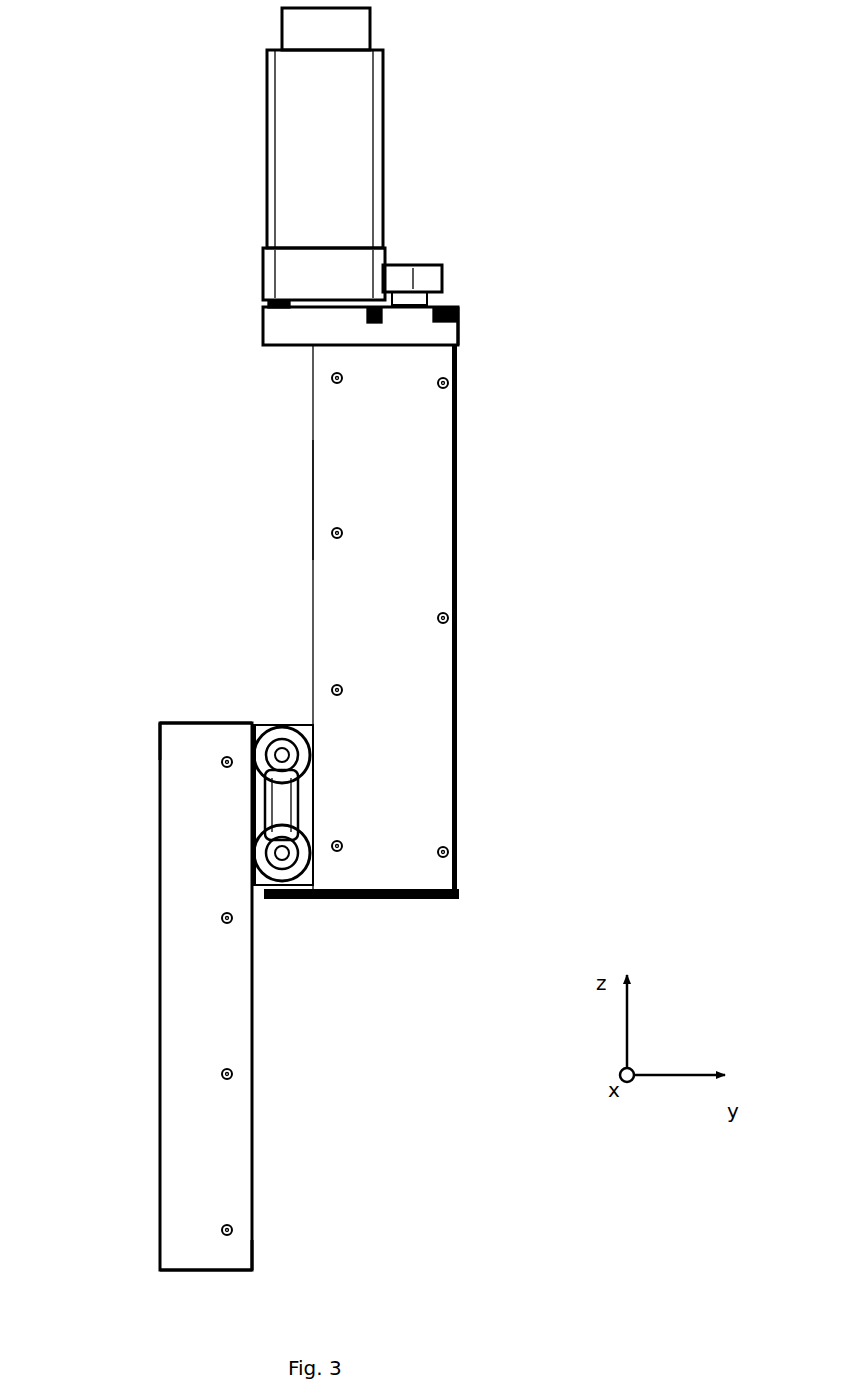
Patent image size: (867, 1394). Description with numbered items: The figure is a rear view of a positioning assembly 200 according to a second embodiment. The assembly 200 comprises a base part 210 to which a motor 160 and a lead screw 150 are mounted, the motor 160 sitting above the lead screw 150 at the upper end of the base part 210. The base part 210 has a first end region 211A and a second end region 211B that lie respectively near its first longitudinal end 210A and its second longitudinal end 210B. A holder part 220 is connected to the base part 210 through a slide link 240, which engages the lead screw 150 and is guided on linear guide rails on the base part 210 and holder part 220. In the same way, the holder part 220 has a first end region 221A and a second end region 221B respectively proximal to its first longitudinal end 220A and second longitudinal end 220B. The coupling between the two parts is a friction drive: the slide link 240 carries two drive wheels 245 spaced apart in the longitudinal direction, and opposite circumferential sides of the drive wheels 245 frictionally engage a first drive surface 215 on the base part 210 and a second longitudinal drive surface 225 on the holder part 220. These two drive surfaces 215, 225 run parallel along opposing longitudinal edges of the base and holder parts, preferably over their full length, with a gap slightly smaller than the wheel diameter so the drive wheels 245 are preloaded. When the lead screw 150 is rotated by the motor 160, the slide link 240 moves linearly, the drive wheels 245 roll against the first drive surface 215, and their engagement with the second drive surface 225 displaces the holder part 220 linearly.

The positioning assembly 200 is at (207, 410).
The motor 160 is at (338, 172).
The lead screw 150 is at (413, 268).
The base part 210 is at (403, 540).
The first longitudinal end 210A is at (448, 307).
The second longitudinal end 210B is at (433, 898).
The first end region 211A is at (465, 342).
The second end region 211B is at (460, 873).
The first drive surface 215 is at (310, 496).
The holder part 220 is at (183, 960).
The first longitudinal end 220A is at (173, 720).
The second longitudinal end 220B is at (237, 1272).
The first end region 221A is at (152, 729).
The second end region 221B is at (260, 1258).
The second longitudinal drive surface 225 is at (255, 1137).
The slide link 240 is at (277, 788).
The drive wheels 245 is at (267, 727).